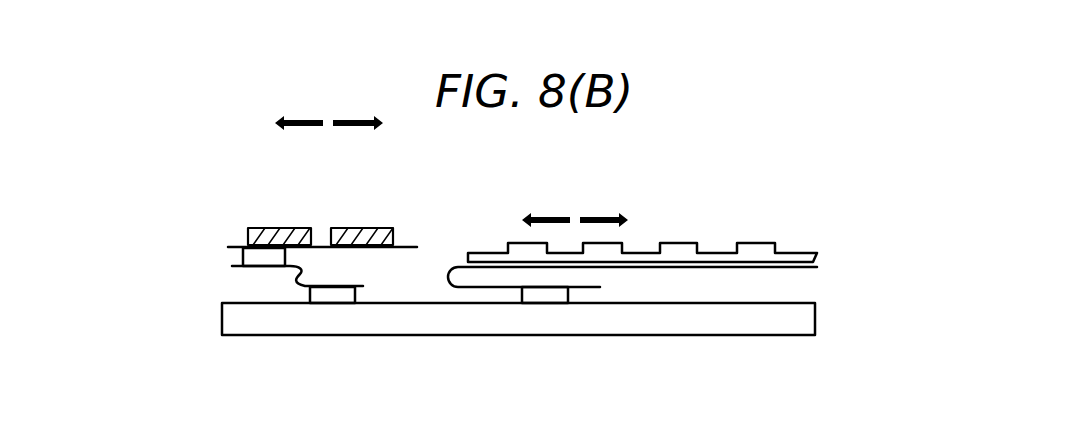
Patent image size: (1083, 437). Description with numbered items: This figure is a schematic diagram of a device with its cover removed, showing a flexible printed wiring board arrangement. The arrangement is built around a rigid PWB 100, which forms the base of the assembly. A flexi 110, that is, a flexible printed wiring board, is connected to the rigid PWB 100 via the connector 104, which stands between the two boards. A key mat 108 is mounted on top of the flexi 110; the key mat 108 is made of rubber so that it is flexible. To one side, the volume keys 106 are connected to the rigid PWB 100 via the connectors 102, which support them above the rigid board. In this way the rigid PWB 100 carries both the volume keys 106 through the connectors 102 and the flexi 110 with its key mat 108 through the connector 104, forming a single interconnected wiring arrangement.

The rigid PWB 100 is at (737, 320).
The connectors 102 is at (238, 259).
The connector 104 is at (550, 298).
The volume keys 106 is at (328, 216).
The key mat 108 is at (697, 238).
The flexi 110 is at (827, 262).